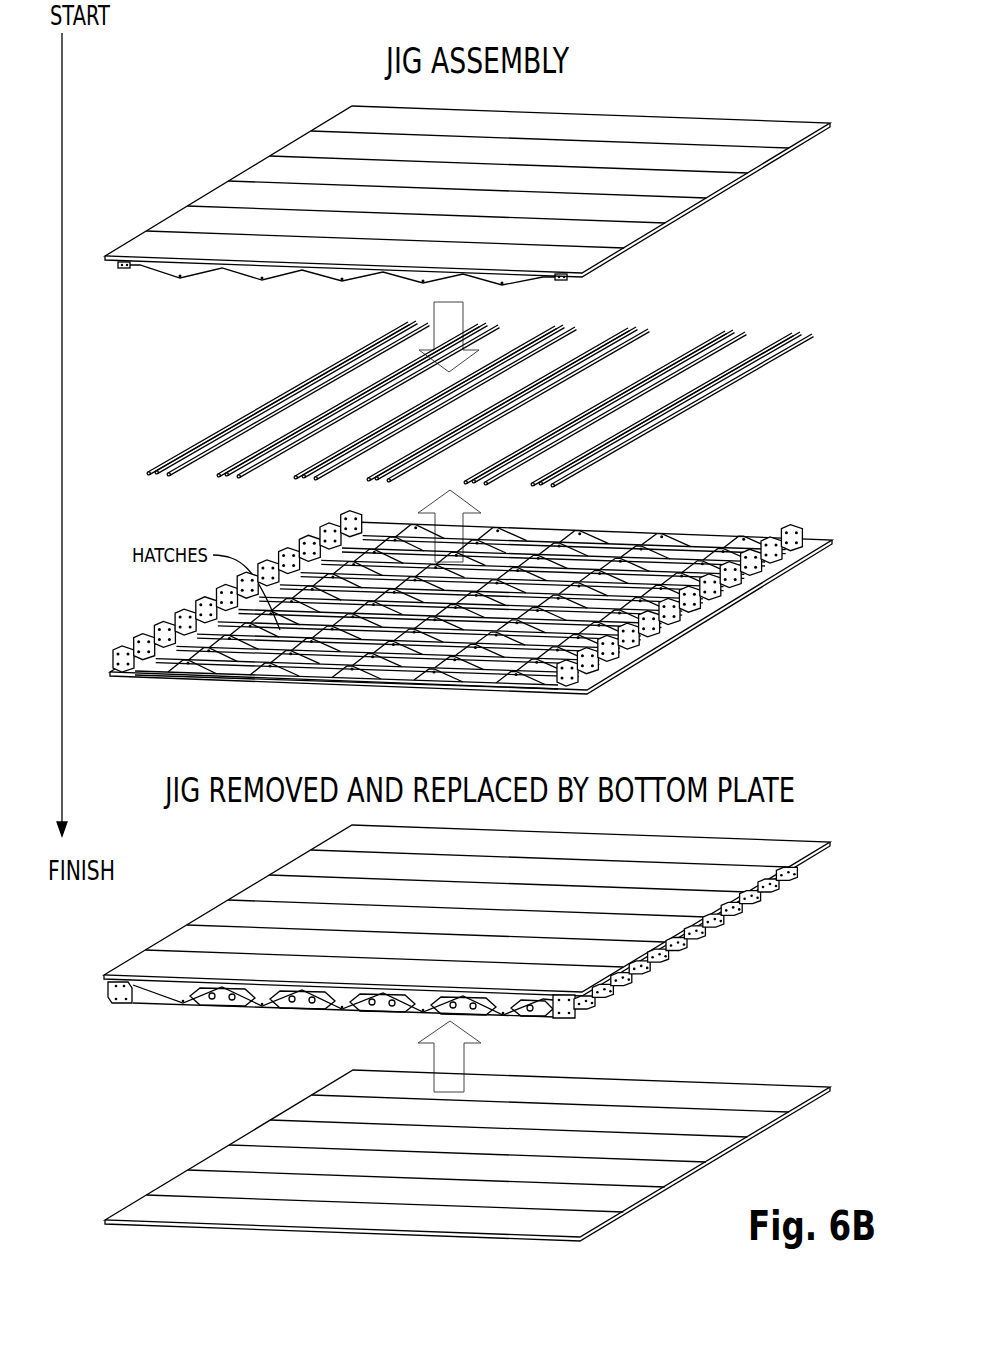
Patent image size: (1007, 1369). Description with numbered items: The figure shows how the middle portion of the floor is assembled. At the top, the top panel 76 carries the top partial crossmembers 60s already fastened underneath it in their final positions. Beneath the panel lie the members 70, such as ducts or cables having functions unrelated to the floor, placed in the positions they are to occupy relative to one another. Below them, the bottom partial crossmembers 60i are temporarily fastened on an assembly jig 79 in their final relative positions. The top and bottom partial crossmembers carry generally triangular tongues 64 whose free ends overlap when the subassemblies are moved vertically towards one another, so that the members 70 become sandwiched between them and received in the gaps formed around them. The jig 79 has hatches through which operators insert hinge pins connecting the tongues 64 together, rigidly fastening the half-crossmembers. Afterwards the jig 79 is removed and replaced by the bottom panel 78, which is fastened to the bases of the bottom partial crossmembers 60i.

The top panel 76 is at (745, 130).
The top partial crossmember 60s is at (510, 278).
The members 70 is at (672, 402).
The tongues 64 is at (483, 533).
The bottom partial crossmember 60i is at (667, 547).
The assembly jig 79 is at (617, 687).
The bottom panel 78 is at (793, 1115).